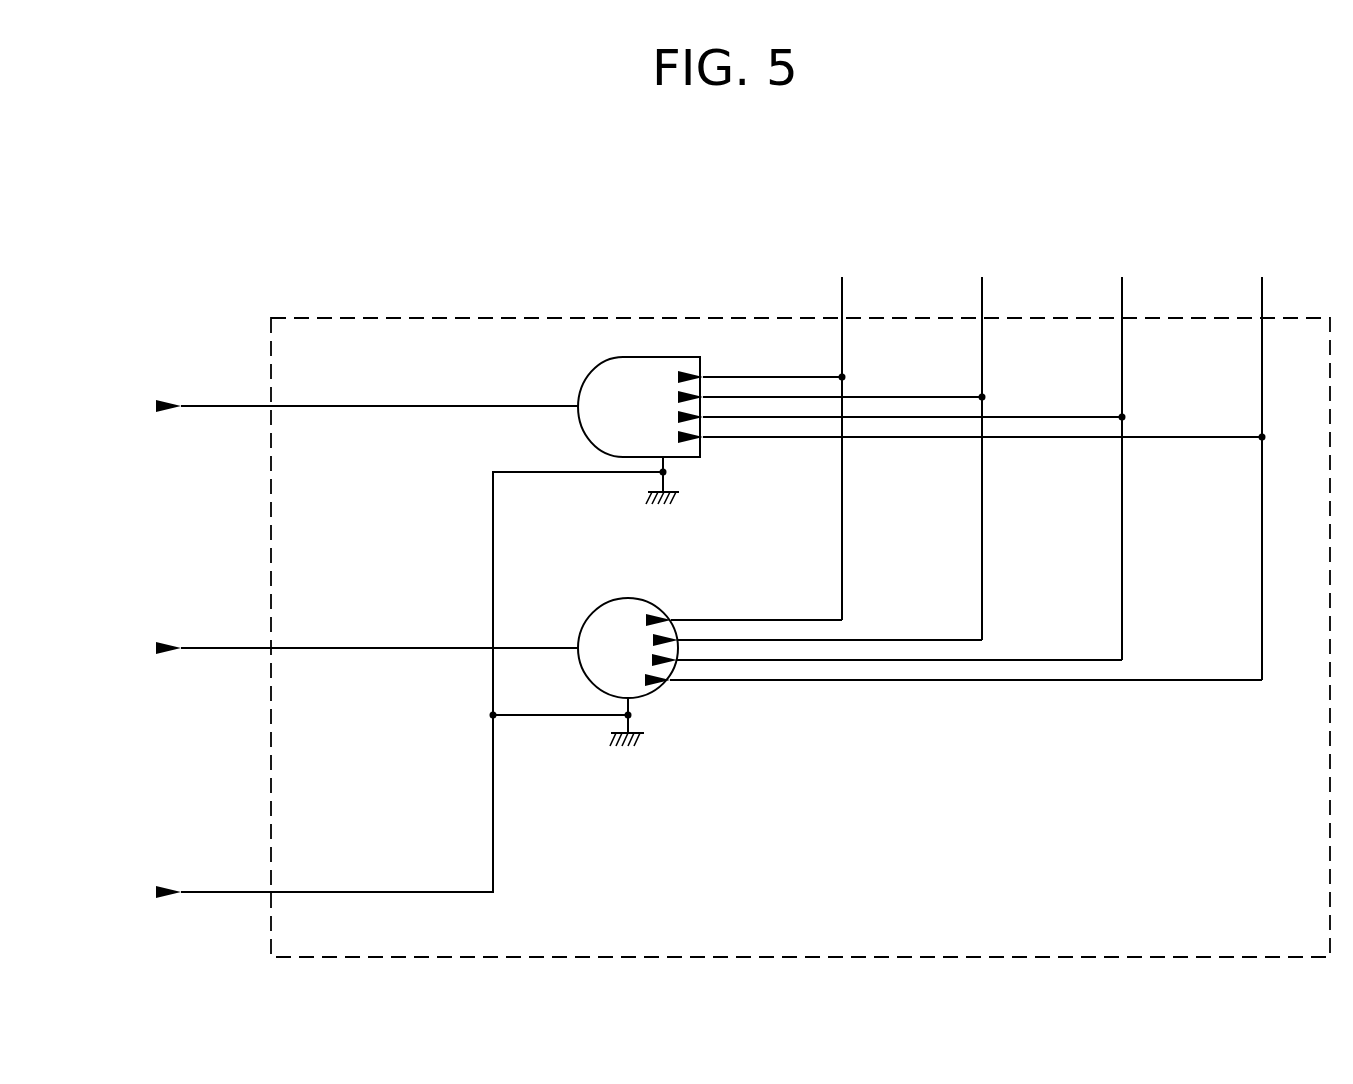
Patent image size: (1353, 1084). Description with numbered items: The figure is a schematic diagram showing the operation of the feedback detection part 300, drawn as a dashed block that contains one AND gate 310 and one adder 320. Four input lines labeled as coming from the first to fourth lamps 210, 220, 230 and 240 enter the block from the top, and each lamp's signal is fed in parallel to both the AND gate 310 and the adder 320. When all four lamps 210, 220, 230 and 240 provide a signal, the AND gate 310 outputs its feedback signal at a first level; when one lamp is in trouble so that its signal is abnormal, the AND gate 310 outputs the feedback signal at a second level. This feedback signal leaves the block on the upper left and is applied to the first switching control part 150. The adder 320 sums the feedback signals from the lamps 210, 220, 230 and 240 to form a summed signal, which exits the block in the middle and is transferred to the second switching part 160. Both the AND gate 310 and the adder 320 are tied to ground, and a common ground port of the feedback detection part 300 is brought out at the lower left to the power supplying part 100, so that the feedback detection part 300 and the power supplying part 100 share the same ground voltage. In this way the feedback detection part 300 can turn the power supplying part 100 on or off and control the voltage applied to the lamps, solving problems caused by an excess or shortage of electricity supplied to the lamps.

The feedback detection part 300 is at (681, 196).
The AND gate 310 is at (636, 357).
The adder 320 is at (602, 603).
The first lamp 210 is at (770, 420).
The second lamp 220 is at (844, 430).
The third lamp 230 is at (913, 440).
The fourth lamp 240 is at (980, 450).
The first switching control part 150 is at (326, 392).
The second switching part 160 is at (326, 635).
The power supplying part 100 is at (368, 690).